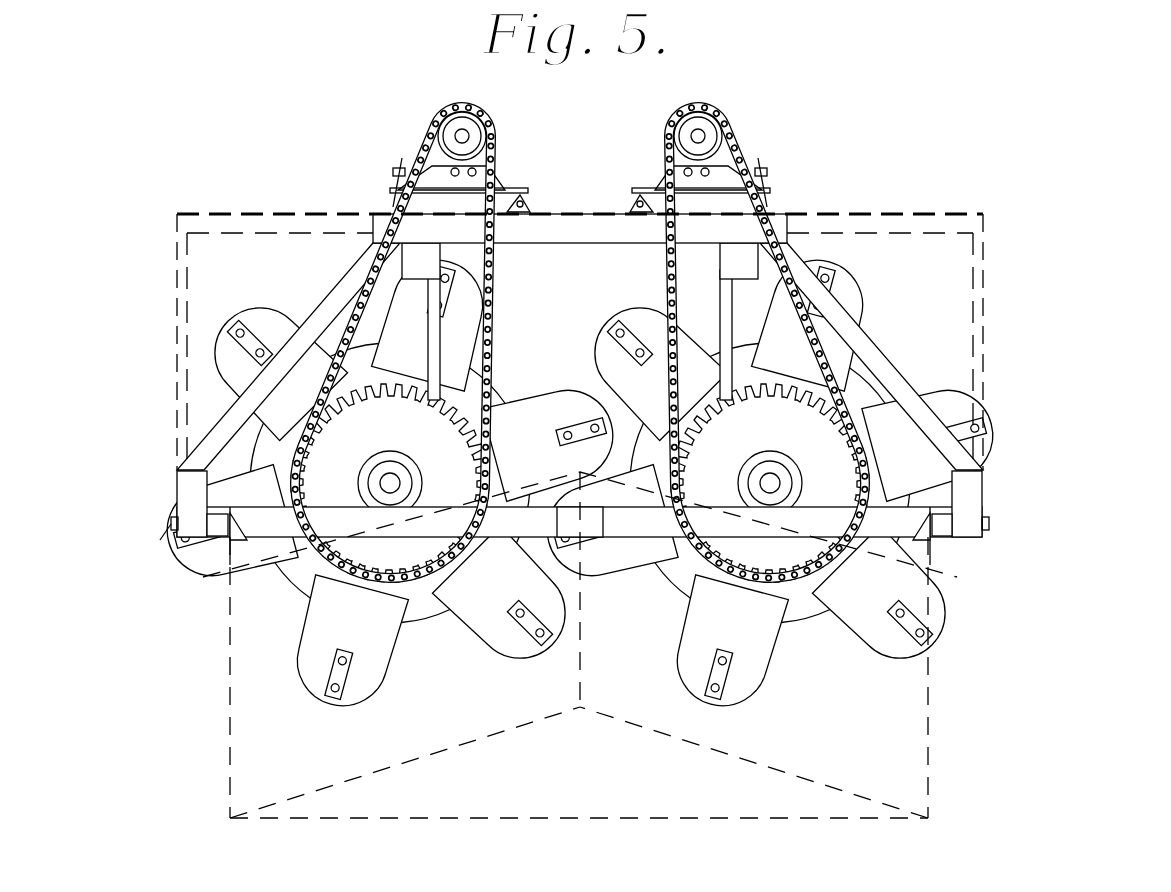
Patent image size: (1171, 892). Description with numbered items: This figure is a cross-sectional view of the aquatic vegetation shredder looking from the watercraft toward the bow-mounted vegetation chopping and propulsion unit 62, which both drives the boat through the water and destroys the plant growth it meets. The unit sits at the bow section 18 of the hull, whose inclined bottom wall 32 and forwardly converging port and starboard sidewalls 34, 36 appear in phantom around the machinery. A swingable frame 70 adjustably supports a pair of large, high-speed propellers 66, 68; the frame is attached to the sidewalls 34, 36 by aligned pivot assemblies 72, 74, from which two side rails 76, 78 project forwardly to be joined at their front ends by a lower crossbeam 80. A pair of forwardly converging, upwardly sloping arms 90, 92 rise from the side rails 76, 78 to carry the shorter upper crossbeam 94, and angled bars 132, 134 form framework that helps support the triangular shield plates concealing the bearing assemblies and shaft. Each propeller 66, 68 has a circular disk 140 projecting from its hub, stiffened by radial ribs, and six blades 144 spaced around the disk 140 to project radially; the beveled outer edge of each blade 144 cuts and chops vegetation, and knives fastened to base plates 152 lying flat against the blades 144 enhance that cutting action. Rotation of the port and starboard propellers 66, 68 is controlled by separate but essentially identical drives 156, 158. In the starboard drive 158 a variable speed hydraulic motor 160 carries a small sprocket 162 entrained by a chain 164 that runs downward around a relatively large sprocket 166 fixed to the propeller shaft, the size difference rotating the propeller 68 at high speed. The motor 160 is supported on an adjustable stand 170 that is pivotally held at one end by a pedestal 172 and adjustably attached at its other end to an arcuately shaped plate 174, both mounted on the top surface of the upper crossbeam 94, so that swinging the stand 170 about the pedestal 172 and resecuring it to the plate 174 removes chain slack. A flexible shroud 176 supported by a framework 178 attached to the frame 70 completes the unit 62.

The bow section 18 is at (950, 724).
The bottom inclined wall 32 is at (625, 797).
The port sidewall 34 is at (262, 760).
The starboard sidewall 36 is at (930, 762).
The vegetation chopping and propulsion unit 62 is at (1005, 463).
The port propeller 66 is at (282, 311).
The starboard propeller 68 is at (835, 272).
The swingable frame 70 is at (178, 469).
The pivot assembly 72 is at (212, 562).
The pivot assembly 74 is at (950, 562).
The side rail 76 is at (180, 529).
The side rail 78 is at (985, 529).
The crossbeam 80 is at (617, 540).
The arm 90 is at (322, 320).
The arm 92 is at (868, 355).
The upper crossbeam 94 is at (541, 246).
The angled bar 132 is at (770, 483).
The angled bar 134 is at (695, 287).
The circular disk 140 is at (812, 606).
The blade 144 is at (603, 380).
The base plate 152 is at (912, 642).
The port drive 156 is at (408, 106).
The starboard drive 158 is at (711, 301).
The variable speed hydraulic motor 160 is at (697, 134).
The sprocket 162 is at (737, 152).
The chain 164 is at (625, 302).
The sprocket 166 is at (777, 580).
The adjustable stand 170 is at (660, 178).
The pedestal 172 is at (635, 205).
The arcuately shaped plate 174 is at (778, 192).
The flexible shroud 176 is at (990, 282).
The framework 178 is at (1003, 357).